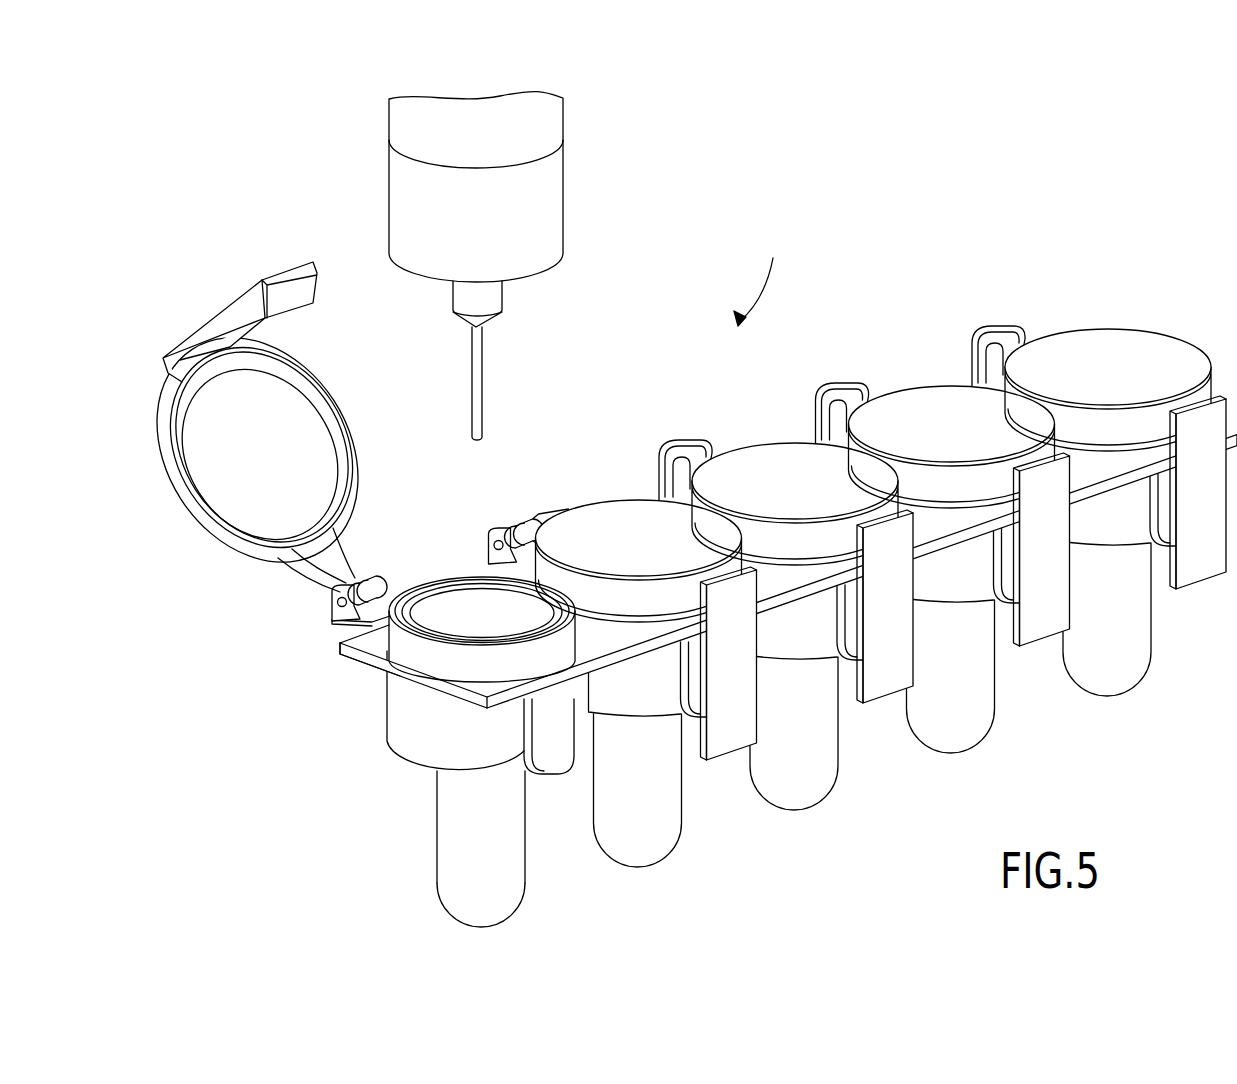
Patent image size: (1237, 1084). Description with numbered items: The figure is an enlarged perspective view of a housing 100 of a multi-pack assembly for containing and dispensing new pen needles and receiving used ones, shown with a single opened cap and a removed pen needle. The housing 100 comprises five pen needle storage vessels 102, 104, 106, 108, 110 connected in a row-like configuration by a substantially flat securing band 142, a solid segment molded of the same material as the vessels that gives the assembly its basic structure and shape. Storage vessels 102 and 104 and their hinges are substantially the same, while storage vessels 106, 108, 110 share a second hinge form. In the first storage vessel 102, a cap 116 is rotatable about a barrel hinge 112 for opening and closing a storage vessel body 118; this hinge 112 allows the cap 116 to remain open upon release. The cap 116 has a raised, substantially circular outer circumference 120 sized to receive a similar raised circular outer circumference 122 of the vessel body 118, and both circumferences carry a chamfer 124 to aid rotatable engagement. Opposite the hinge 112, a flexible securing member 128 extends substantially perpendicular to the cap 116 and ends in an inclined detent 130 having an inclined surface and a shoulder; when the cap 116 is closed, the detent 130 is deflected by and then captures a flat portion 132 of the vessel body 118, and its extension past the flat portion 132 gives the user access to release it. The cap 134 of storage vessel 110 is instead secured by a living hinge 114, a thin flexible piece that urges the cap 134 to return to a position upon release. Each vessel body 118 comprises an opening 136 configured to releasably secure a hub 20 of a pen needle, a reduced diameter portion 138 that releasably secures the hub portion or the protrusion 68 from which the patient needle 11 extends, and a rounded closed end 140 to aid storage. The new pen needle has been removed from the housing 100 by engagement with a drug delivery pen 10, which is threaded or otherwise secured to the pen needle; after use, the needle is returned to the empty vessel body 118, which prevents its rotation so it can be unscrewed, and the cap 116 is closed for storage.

The drug delivery pen 10 is at (565, 108).
The hub 20 is at (565, 178).
The protrusion 68 is at (503, 300).
The patient needle 11 is at (484, 378).
The housing 100 is at (760, 274).
The pen needle storage vessel 102 is at (482, 604).
The pen needle storage vessel 104 is at (585, 502).
The pen needle storage vessel 106 is at (776, 431).
The pen needle storage vessel 108 is at (886, 393).
The pen needle storage vessel 110 is at (1108, 362).
The barrel hinge 112 is at (332, 601).
The living hinge 114 is at (665, 449).
The cap 116 is at (257, 419).
The storage vessel body 118 is at (390, 741).
The raised substantially circular outer circumference 120 is at (328, 393).
The raised substantially circular outer circumference 122 is at (402, 656).
The chamfer 124 is at (373, 622).
The flexible securing member 128 is at (228, 302).
The inclined detent 130 is at (322, 289).
The flat portion 132 is at (561, 776).
The cap 134 is at (1137, 379).
The opening 136 is at (495, 623).
The reduced diameter portion 138 is at (437, 812).
The closed end 140 is at (440, 904).
The securing band 142 is at (343, 660).